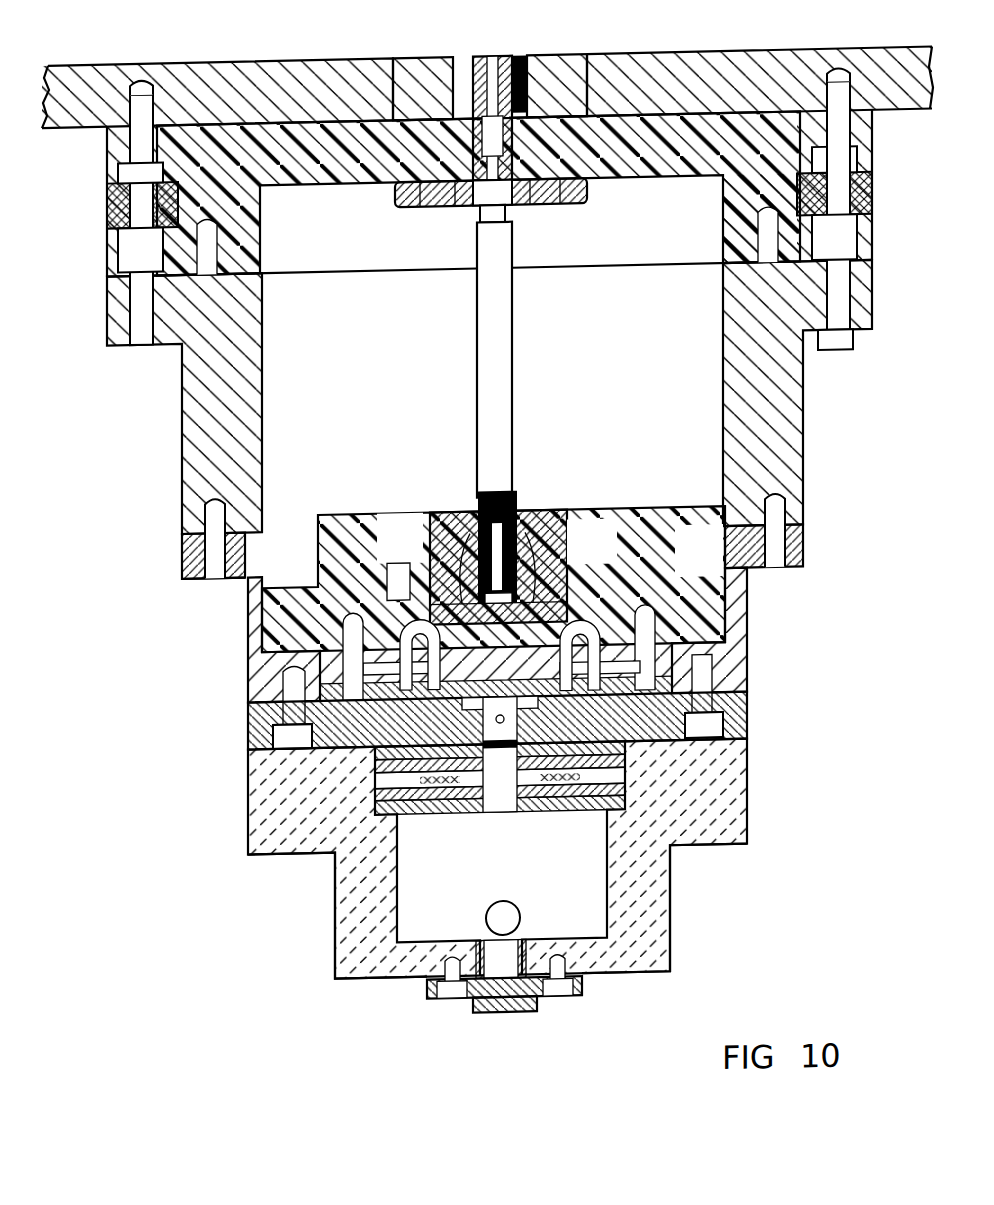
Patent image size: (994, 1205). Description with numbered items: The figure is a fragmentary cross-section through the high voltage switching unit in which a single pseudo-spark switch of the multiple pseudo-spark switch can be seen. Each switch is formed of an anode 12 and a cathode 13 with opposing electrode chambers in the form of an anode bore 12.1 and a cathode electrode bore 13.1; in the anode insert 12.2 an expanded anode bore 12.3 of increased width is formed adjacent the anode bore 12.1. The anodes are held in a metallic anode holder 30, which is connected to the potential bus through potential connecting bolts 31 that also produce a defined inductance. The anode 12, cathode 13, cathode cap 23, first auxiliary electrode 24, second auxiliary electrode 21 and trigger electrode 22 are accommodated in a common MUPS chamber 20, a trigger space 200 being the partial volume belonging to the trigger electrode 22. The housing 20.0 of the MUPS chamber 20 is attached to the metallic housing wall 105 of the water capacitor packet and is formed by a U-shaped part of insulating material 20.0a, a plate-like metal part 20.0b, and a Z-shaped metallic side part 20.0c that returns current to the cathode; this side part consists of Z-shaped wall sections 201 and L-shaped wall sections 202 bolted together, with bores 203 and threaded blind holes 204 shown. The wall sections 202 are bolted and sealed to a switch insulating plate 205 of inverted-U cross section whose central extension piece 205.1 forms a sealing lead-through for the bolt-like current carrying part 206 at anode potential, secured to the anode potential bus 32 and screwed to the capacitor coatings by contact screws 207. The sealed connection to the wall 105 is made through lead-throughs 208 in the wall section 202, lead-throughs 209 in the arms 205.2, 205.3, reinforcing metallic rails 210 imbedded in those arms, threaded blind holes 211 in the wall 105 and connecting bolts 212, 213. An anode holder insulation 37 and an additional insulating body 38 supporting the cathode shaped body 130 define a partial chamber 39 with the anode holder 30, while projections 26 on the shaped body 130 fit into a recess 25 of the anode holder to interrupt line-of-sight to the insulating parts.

The housing wall 105 is at (306, 68).
The central extension piece 205.1 is at (421, 72).
The contact screws 207 is at (490, 56).
The current carrying part 206 is at (508, 57).
The threaded blind holes 211 is at (143, 84).
The lead-throughs 209 is at (130, 137).
The metallic rails 210 is at (108, 203).
The switch insulating plate 205 is at (332, 180).
The U-arm 205.2 is at (255, 268).
The U-arm 205.3 is at (740, 204).
The anode potential bus 32 is at (584, 193).
The connecting bolts 212 is at (856, 172).
The lead-throughs 208 is at (141, 330).
The connecting bolts 213 is at (836, 358).
The potential connecting bolts 31 is at (502, 326).
The L-shaped wall section 202 is at (188, 426).
The threaded blind holes 204 is at (204, 504).
The side part 20.0c is at (184, 558).
The bores 203 is at (216, 566).
The Z-shaped wall section 201 is at (248, 646).
The cathode shaped body 130 is at (322, 686).
The plate-like metal part 20.0b is at (252, 723).
The insulating material part 20.0a is at (262, 809).
The housing 20.0 is at (334, 915).
The anode 12 is at (436, 534).
The anode bore 12.1 is at (466, 545).
The anode insert 12.2 is at (520, 531).
The anode holder 30 is at (543, 524).
The projections 26 is at (416, 598).
The expanded anode bore 12.3 is at (556, 564).
The recess 25 is at (652, 577).
The anode holder insulation 37 is at (728, 607).
The partial chamber 39 is at (700, 655).
The cathode 13 is at (725, 675).
The additional insulating body 38 is at (702, 709).
The first auxiliary electrode 24 is at (468, 789).
The cathode cap 23 is at (502, 795).
The second auxiliary electrode 21 is at (556, 793).
The cathode electrode bore 13.1 is at (514, 790).
The MUPS chamber 20 is at (545, 909).
The trigger space 200 is at (615, 909).
The trigger electrode 22 is at (510, 1013).